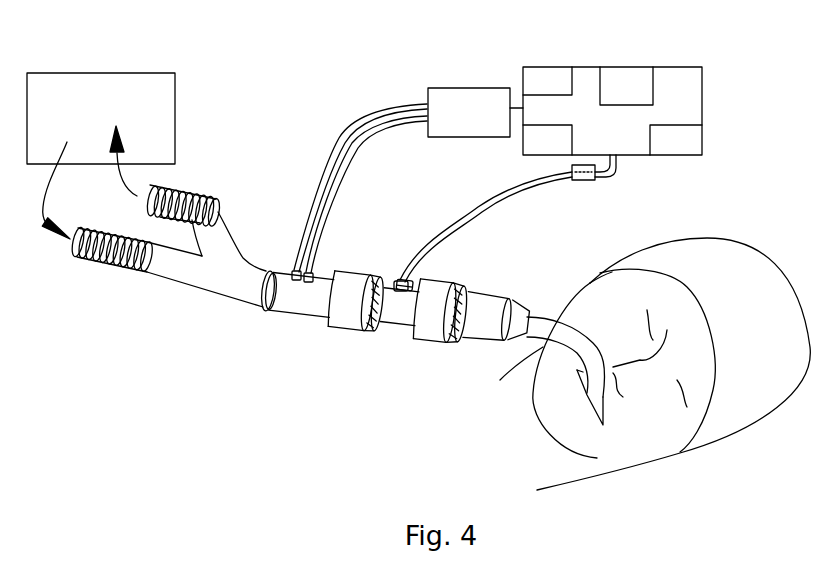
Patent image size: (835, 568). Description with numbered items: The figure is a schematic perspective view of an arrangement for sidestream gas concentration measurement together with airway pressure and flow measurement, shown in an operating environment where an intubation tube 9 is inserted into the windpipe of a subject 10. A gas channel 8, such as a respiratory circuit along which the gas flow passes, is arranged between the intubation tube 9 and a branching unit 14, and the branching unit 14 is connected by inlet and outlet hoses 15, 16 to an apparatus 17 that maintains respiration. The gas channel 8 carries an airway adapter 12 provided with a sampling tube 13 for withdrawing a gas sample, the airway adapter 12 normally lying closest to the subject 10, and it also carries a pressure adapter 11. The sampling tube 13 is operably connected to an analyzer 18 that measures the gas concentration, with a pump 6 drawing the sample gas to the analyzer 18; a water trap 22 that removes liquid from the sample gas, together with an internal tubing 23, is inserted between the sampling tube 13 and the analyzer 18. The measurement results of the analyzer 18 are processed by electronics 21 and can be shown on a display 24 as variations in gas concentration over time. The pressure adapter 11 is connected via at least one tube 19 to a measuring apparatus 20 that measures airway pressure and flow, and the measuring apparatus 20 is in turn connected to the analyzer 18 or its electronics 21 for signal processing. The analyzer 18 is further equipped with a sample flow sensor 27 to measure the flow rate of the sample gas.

The pump 6 is at (688, 138).
The gas channel 8 is at (327, 344).
The intubation tube 9 is at (532, 320).
The subject 10 is at (733, 437).
The pressure adapter 11 is at (306, 299).
The airway adapter 12 is at (403, 311).
The sampling tube 13 is at (417, 260).
The branching unit 14 is at (225, 278).
The inlet hose 15 is at (100, 266).
The outlet hose 16 is at (190, 196).
The apparatus maintaining a respiration 17 is at (102, 73).
The analyzer 18 is at (615, 98).
The tube 19 is at (340, 147).
The measuring apparatus 20 is at (462, 88).
The electronics 21 is at (543, 78).
The water trap 22 is at (580, 180).
The internal tubing 23 is at (612, 172).
The display 24 is at (623, 78).
The sample flow sensor 27 is at (540, 143).